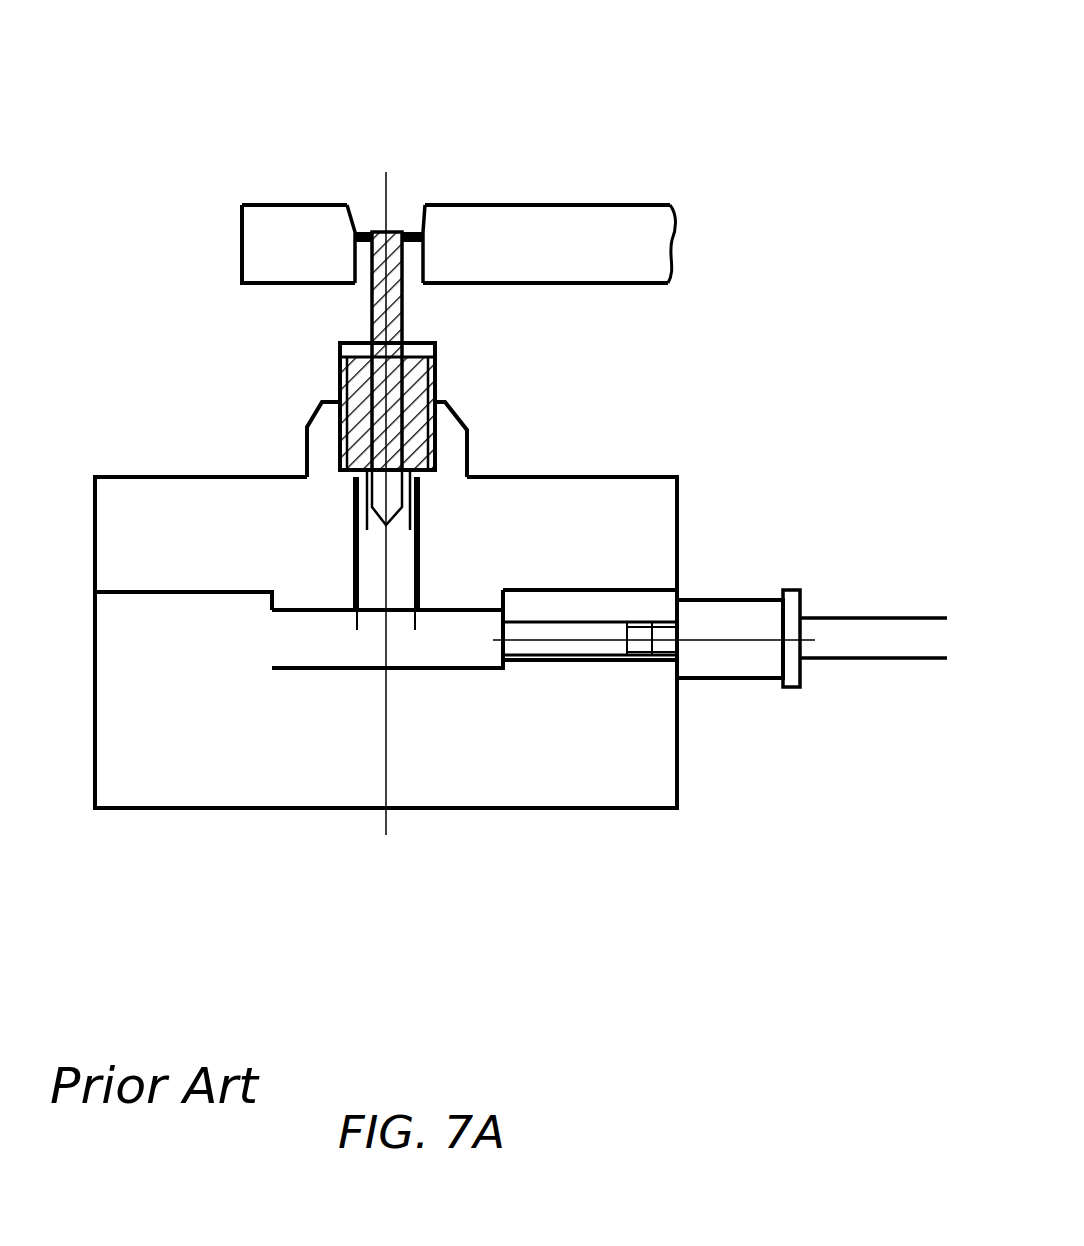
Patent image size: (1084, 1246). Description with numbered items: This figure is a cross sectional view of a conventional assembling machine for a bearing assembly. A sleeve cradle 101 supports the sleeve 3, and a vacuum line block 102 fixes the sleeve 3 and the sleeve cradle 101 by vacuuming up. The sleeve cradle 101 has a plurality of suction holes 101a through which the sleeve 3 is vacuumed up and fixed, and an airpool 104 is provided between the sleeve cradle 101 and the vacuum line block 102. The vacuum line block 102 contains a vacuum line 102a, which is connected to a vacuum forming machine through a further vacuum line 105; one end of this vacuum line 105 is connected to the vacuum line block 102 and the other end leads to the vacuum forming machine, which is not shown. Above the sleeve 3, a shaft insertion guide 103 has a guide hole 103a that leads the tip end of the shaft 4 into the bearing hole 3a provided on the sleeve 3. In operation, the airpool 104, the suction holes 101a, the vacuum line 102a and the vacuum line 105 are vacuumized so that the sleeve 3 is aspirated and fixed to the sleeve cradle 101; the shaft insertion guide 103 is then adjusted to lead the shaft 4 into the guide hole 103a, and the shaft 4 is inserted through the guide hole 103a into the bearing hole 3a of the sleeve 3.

The shaft insertion guide 103 is at (598, 207).
The guide hole 103a is at (418, 225).
The shaft 4 is at (372, 305).
The sleeve 3 is at (435, 372).
The bearing hole 3a is at (368, 380).
The sleeve cradle 101 is at (677, 497).
The suction hole 101a is at (355, 548).
The airpool 104 is at (283, 667).
The vacuum line 102a is at (557, 660).
The vacuum line block 102 is at (658, 810).
The vacuum line 105 is at (893, 658).